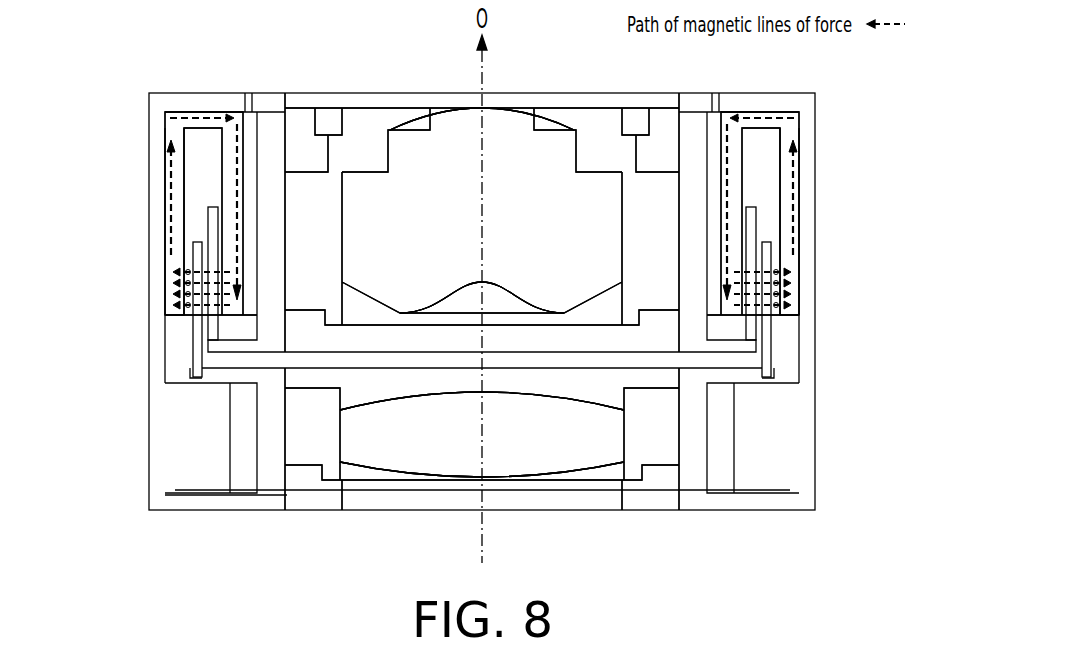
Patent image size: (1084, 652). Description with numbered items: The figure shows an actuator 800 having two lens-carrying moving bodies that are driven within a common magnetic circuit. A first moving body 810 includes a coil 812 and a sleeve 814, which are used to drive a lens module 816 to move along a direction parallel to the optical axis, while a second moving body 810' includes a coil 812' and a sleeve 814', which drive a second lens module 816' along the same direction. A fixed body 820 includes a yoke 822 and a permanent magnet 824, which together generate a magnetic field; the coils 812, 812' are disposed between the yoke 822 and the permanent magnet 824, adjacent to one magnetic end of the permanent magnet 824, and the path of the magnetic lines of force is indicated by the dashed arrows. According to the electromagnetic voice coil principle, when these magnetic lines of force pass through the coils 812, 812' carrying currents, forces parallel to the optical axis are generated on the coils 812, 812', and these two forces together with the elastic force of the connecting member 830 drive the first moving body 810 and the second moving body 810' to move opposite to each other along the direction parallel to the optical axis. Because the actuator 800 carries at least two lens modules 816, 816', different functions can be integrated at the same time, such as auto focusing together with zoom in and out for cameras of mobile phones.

The actuator 800 is at (817, 576).
The first moving body 810 is at (606, 222).
The coil 812 is at (541, 273).
The sleeve 814 is at (520, 222).
The lens module 816 is at (580, 222).
The second moving body 810' is at (355, 439).
The coil 812' is at (424, 325).
The sleeve 814' is at (438, 404).
The lens module 816' is at (378, 439).
The fixed body 820 is at (882, 75).
The yoke 822 is at (798, 117).
The permanent magnet 824 is at (791, 143).
The connecting member 830 is at (233, 110).